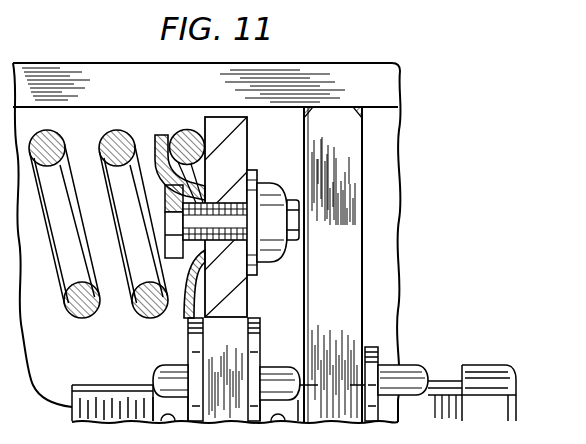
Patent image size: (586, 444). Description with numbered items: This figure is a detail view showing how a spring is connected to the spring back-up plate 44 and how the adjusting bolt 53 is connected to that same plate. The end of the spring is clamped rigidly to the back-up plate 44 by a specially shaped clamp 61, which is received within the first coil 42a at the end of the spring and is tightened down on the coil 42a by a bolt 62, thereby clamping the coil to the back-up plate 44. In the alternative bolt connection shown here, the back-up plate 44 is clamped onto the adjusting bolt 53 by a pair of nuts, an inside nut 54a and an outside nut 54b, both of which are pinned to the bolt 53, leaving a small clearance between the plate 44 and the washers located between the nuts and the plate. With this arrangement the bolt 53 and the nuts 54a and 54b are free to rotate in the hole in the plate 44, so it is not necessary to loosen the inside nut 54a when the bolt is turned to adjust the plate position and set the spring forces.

The clamp 61 is at (153, 145).
The first coil 42a is at (182, 131).
The bolt 62 is at (230, 192).
The spring back-up plate 44 is at (250, 292).
The inside nut 54a is at (160, 378).
The outside nut 54b is at (282, 370).
The adjusting bolt 53 is at (447, 388).